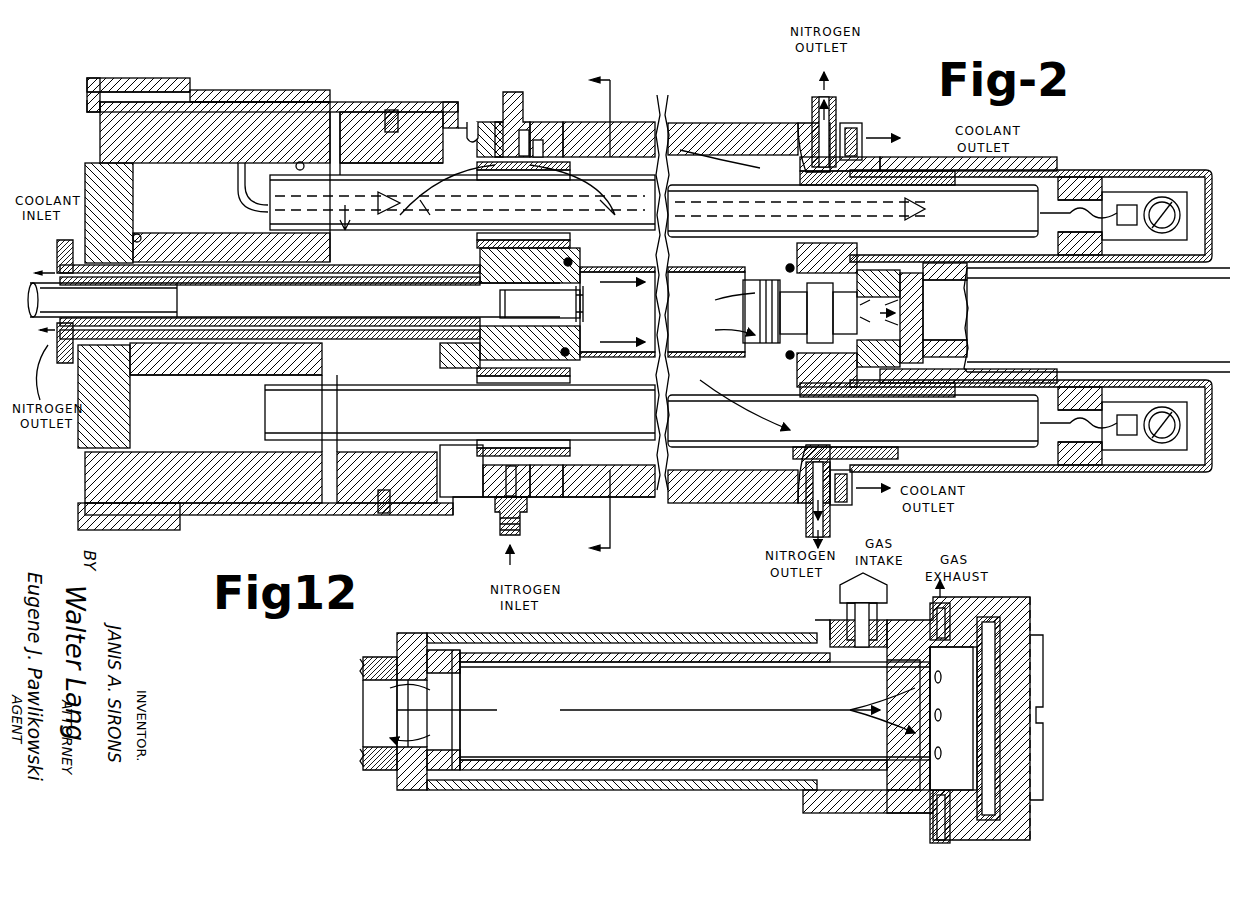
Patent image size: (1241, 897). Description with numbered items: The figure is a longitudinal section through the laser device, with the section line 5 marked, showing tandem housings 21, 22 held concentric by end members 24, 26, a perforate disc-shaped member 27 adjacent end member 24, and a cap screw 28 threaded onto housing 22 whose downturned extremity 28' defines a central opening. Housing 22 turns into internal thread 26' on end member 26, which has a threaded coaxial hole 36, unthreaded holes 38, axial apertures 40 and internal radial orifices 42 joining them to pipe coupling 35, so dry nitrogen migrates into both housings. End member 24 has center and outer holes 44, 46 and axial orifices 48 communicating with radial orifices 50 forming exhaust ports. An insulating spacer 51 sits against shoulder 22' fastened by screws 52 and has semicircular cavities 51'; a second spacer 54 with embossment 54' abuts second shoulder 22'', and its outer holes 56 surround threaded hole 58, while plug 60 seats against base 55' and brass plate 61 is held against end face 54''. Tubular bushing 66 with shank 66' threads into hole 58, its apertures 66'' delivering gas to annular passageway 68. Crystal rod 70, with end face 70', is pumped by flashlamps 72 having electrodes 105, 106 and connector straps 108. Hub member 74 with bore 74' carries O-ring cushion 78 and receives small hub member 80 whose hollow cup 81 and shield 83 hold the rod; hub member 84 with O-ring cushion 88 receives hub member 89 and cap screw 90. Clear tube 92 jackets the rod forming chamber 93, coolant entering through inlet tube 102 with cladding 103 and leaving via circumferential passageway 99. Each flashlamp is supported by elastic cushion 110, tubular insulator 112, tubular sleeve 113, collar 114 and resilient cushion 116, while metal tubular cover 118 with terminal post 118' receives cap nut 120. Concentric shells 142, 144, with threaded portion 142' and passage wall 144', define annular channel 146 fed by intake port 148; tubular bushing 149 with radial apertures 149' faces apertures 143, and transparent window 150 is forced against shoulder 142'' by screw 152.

In FIG. 2, the section line 5 is at (592, 309).
In FIG. 2, the housing 21 is at (594, 122).
In FIG. 2, the housing 22 is at (279, 115).
In FIG. 2, the shoulder 22' is at (444, 101).
In FIG. 2, the second shoulder 22'' is at (145, 115).
In FIG. 2, the end member 24 is at (836, 118).
In FIG. 2, the end member 26 is at (512, 108).
In FIG. 2, the internal thread 26' is at (482, 116).
In FIG. 2, the disc-shaped member 27 is at (862, 128).
In FIG. 2, the cap screw 28 is at (138, 76).
In FIG. 2, the downturned extremity 28' is at (66, 101).
In FIG. 2, the pipe coupling 35 is at (496, 532).
In FIG. 2, the threaded coaxial hole 36 is at (470, 368).
In FIG. 2, the unthreaded holes 38 is at (556, 122).
In FIG. 2, the axial apertures 40 is at (524, 140).
In FIG. 2, the internal radial orifices 42 is at (483, 476).
In FIG. 2, the threaded center hole 44 is at (840, 365).
In FIG. 2, the threaded outer holes 46 is at (797, 258).
In FIG. 2, the axial orifices 48 is at (805, 140).
In FIG. 2, the radial orifice 50 is at (816, 112).
In FIG. 2, the electrically-insulating spacer 51 is at (390, 116).
In FIG. 2, the semicircular axial cavities 51' is at (391, 146).
In FIG. 2, the screws 52 is at (392, 110).
In FIG. 2, the second electrically-insulating spacer 54 is at (260, 86).
In FIG. 2, the embossment 54' is at (242, 73).
In FIG. 2, the end face 54'' is at (265, 491).
In FIG. 2, the base of cavity 55' is at (146, 222).
In FIG. 2, the outer axial unthreaded holes 56 is at (300, 162).
In FIG. 2, the central axial threaded hole 58 is at (185, 235).
In FIG. 2, the plug 60 is at (86, 163).
In FIG. 2, the brass plate 61 is at (90, 124).
In FIG. 2, the tubular bushing 66 is at (50, 291).
In FIG. 2, the shank 66' is at (226, 378).
In FIG. 2, the apertures 66'' is at (460, 392).
In FIG. 2, the annular passageway 68 is at (160, 350).
In FIG. 2, the crystal rod 70 is at (706, 312).
In FIG. 2, the end face 70' is at (617, 312).
In FIG. 2, the flashlamps 72 is at (853, 316).
In FIG. 2, the hub member 74 is at (515, 298).
In FIG. 2, the tubular bore 74' is at (270, 302).
In FIG. 2, the O-ring cushion 78 is at (570, 356).
In FIG. 2, the small hub member 80 is at (540, 304).
In FIG. 2, the hollow cup 81 is at (578, 254).
In FIG. 2, the shield 83 is at (585, 300).
In FIG. 2, the hub member 84 is at (786, 268).
In FIG. 2, the O-ring cushion 88 is at (786, 358).
In FIG. 2, the hub member 89 is at (818, 313).
In FIG. 2, the cap screw 90 is at (761, 311).
In FIG. 2, the clear tube 92 is at (606, 278).
In FIG. 2, the chamber 93 is at (636, 278).
In FIG. 2, the circumferential passageway 99 is at (860, 138).
In FIG. 2, the coolant inlet tube 102 is at (135, 310).
In FIG. 2, the thermally insulating cladding material 103 is at (358, 258).
In FIG. 2, the high voltage electrode 105 is at (272, 212).
In FIG. 2, the ground electrode 106 is at (955, 195).
In FIG. 2, the connector straps 108 is at (240, 185).
In FIG. 2, the elastic cushion 110 is at (540, 240).
In FIG. 2, the tubular electrical insulator 112 is at (565, 236).
In FIG. 2, the tubular sleeve 113 is at (860, 164).
In FIG. 2, the collar 114 is at (900, 168).
In FIG. 2, the resilient cushion 116 is at (855, 185).
In FIG. 2, the metal tubular cover 118 is at (1031, 313).
In FIG. 2, the terminal post 118' is at (1122, 345).
In FIG. 2, the metal cap nut 120 is at (1192, 170).
In FIG. 2, the outer tubular shell 142 is at (1097, 320).
In FIG. 12, the outer tubular shell 142 is at (665, 709).
In FIG. 12, the threaded portion 142' is at (369, 697).
In FIG. 12, the shoulder 142'' is at (962, 704).
In FIG. 12, the apertures 143 is at (925, 625).
In FIG. 2, the inner tubular shell 144 is at (969, 319).
In FIG. 12, the inner tubular shell 144 is at (660, 682).
In FIG. 2, the passage wall 144' is at (948, 338).
In FIG. 12, the annular-shaped channel 146 is at (770, 650).
In FIG. 12, the intake port 148 is at (838, 598).
In FIG. 12, the tubular bushing 149 is at (914, 718).
In FIG. 12, the radial apertures 149' is at (880, 718).
In FIG. 12, the transparent window 150 is at (1000, 702).
In FIG. 12, the screw 152 is at (1032, 625).